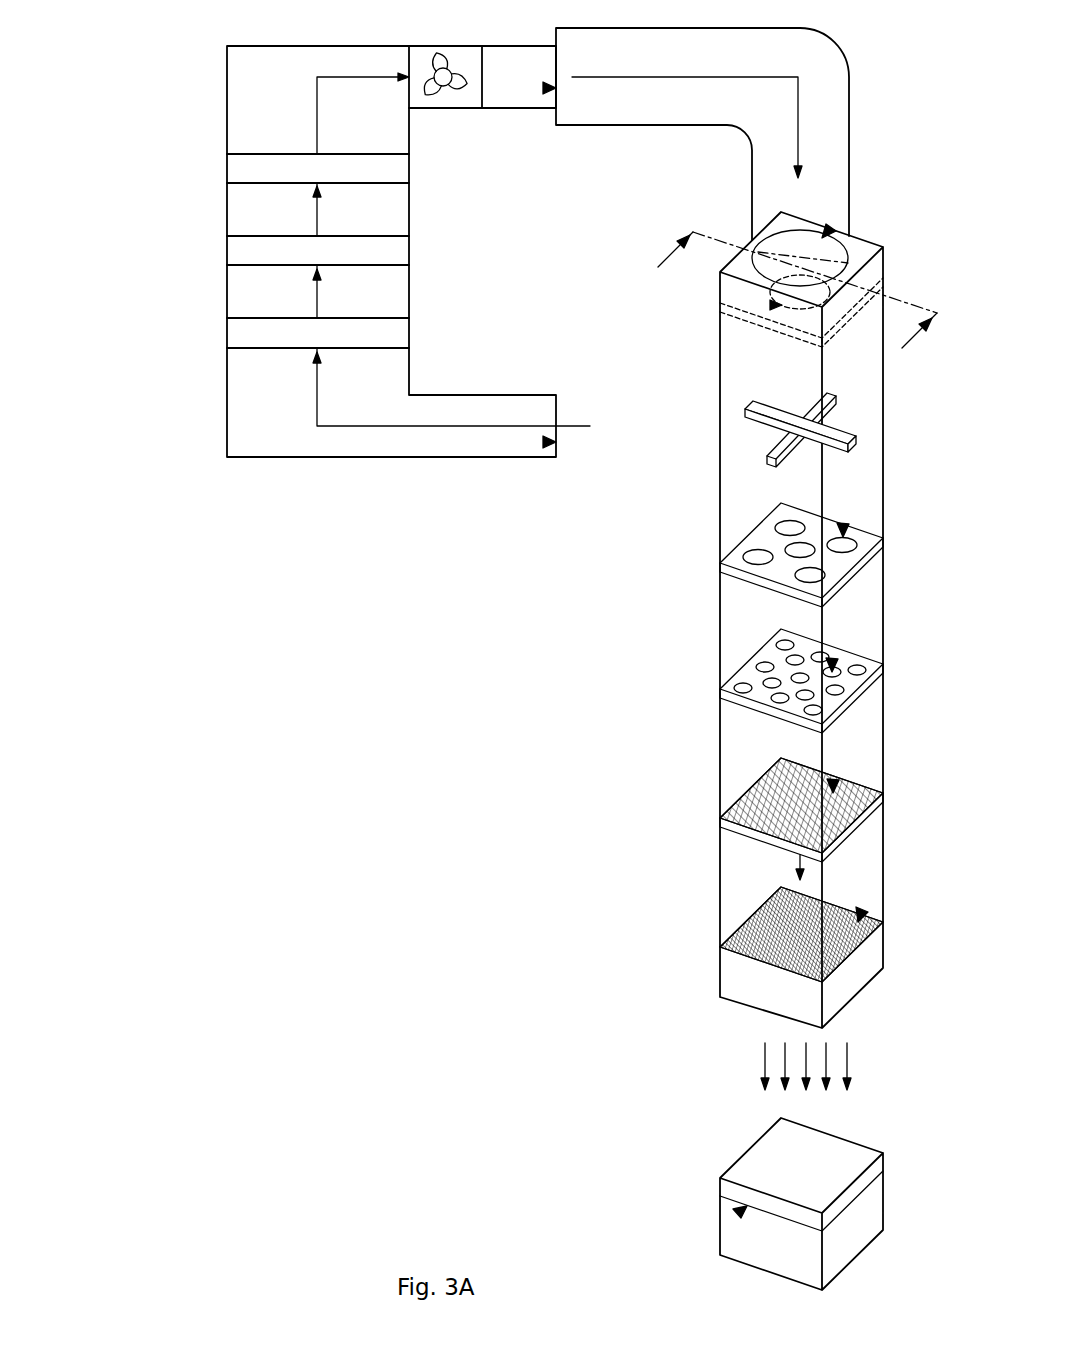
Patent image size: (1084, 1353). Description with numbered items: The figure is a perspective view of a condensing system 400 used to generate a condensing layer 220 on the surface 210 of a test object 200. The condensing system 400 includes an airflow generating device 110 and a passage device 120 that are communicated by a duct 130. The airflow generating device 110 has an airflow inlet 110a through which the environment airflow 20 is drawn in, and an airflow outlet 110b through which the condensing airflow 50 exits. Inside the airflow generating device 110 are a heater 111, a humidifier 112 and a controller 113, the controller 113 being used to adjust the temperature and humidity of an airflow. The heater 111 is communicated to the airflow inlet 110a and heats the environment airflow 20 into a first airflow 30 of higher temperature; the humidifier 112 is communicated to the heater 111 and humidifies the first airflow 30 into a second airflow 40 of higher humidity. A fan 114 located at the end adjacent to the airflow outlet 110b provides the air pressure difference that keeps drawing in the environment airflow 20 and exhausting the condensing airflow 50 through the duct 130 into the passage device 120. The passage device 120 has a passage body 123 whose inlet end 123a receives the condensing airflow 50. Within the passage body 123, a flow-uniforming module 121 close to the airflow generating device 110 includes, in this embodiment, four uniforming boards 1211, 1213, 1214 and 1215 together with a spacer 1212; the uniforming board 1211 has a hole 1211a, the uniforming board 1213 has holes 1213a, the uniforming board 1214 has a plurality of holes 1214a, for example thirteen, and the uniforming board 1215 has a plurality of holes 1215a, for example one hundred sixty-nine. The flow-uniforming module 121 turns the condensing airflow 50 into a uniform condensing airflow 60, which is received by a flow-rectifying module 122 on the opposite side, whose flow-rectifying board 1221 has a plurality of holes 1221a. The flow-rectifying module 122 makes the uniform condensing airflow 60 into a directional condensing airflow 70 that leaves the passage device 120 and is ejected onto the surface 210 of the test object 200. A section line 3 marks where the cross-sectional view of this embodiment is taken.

The condensing system 400 is at (135, 583).
The airflow generating device 110 is at (108, 2).
The heater 111 is at (240, 330).
The humidifier 112 is at (240, 248).
The controller 113 is at (240, 168).
The fan 114 is at (423, 55).
The airflow inlet 110a is at (546, 442).
The airflow outlet 110b is at (546, 88).
The environment airflow 20 is at (317, 378).
The first airflow 30 is at (317, 297).
The second airflow 40 is at (317, 216).
The condensing airflow 50 is at (358, 77).
The duct 130 is at (590, 28).
The passage device 120 is at (553, 472).
The flow-uniforming module 121 is at (621, 693).
The uniforming board 1211 is at (758, 322).
The hole 1211a is at (772, 305).
The spacer 1212 is at (763, 419).
The uniforming board 1213 is at (760, 537).
The holes 1213a is at (843, 528).
The uniforming board 1214 is at (768, 650).
The holes 1214a is at (832, 663).
The uniforming board 1215 is at (765, 773).
The holes 1215a is at (833, 784).
The flow-rectifying module 122 is at (743, 976).
The flow-rectifying board 1221 is at (843, 927).
The holes 1221a is at (860, 916).
The passage body 123 is at (720, 764).
The inlet end 123a is at (828, 231).
The uniform condensing airflow 60 is at (822, 868).
The directional condensing airflow 70 is at (765, 1063).
The line 3- 3 is at (791, 307).
The test object 200 is at (745, 1238).
The surface 210 is at (738, 1211).
The condensing layer 220 is at (763, 1168).